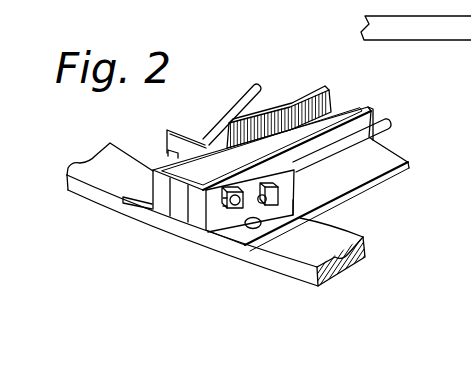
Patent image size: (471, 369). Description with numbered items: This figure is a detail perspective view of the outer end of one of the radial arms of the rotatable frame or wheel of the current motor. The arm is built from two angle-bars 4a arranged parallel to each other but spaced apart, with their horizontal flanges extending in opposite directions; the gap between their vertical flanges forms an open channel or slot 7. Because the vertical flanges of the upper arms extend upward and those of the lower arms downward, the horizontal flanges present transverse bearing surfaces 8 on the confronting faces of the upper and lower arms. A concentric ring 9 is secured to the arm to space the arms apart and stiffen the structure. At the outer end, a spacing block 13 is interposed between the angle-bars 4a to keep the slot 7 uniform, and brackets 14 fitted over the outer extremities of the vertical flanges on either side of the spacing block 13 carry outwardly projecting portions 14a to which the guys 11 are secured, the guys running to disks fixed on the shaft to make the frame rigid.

The angle-bars 4a is at (286, 114).
The open channel or slot 7 is at (343, 107).
The transverse bearing surfaces 8 is at (368, 192).
The concentric rings 9 is at (231, 221).
The guys 11 is at (238, 117).
The spacing block 13 is at (175, 210).
The brackets 14 is at (202, 223).
The outwardly projecting portions 14a is at (293, 215).